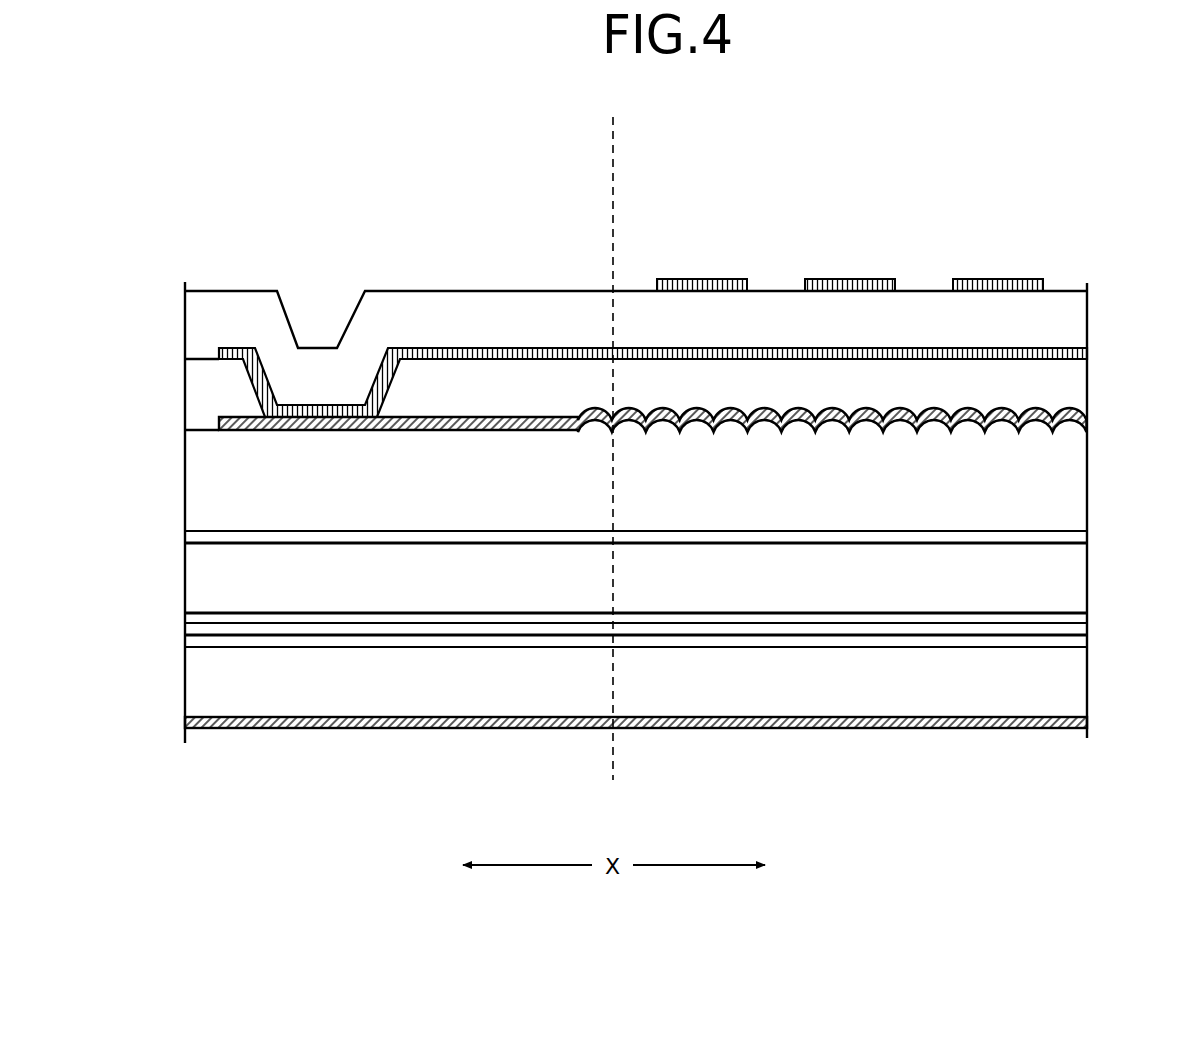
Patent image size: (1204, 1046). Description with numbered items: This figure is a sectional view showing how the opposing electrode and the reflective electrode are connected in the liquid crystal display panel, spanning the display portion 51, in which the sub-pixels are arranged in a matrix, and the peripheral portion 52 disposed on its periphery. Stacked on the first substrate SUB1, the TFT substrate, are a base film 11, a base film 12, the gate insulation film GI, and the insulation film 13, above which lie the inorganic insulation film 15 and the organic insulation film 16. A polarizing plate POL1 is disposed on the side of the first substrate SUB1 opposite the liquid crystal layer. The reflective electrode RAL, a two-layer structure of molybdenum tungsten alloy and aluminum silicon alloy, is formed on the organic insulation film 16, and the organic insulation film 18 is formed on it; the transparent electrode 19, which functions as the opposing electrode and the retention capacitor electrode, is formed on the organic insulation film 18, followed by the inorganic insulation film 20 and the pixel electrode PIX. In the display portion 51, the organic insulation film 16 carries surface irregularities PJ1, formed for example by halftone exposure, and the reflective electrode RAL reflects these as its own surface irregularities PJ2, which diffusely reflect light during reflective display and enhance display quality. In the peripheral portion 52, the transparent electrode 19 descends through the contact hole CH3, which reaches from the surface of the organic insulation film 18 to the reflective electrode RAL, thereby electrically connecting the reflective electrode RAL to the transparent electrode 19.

The peripheral portion 52 is at (613, 140).
The display portion 51 is at (1122, 141).
The inorganic insulation film 20 is at (1052, 321).
The pixel electrode PIX is at (700, 289).
The organic insulation film 18 is at (680, 307).
The contact hole CH3 is at (385, 373).
The transparent electrode 19 is at (590, 350).
The organic insulation film 16 is at (680, 333).
The reflective electrode RAL is at (560, 417).
The surface irregularities PJ2 is at (830, 410).
The surface irregularities PJ1 is at (865, 423).
The inorganic insulation film 15 is at (587, 537).
The insulation film 13 is at (1052, 575).
The gate insulation film GI is at (480, 618).
The base film 12 is at (423, 630).
The base film 11 is at (377, 640).
The first substrate SUB1 is at (1052, 680).
The polarizing plate POL1 is at (290, 730).